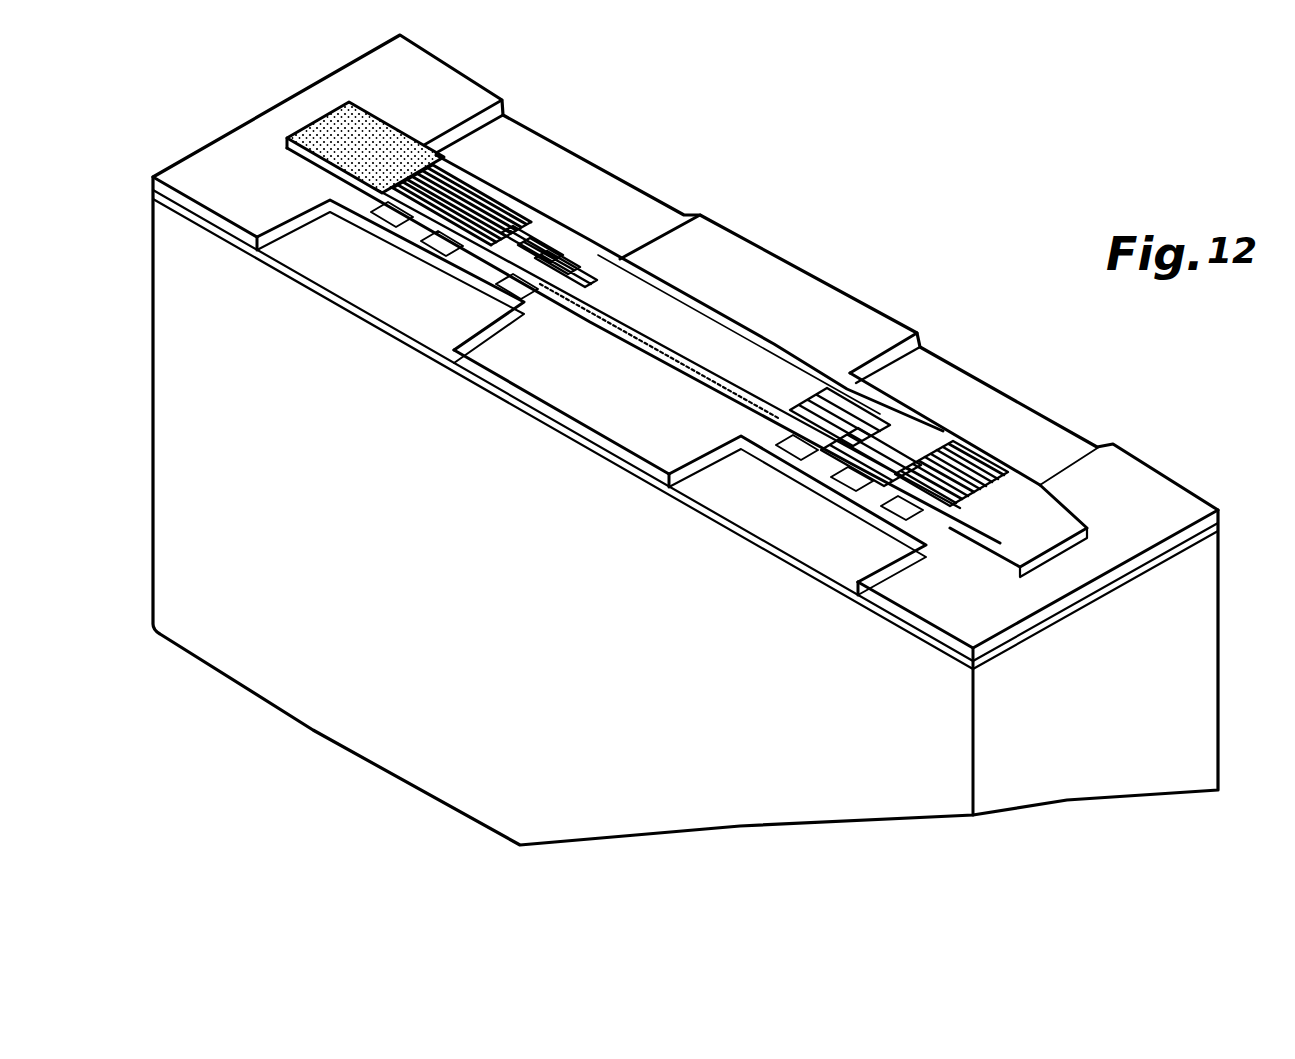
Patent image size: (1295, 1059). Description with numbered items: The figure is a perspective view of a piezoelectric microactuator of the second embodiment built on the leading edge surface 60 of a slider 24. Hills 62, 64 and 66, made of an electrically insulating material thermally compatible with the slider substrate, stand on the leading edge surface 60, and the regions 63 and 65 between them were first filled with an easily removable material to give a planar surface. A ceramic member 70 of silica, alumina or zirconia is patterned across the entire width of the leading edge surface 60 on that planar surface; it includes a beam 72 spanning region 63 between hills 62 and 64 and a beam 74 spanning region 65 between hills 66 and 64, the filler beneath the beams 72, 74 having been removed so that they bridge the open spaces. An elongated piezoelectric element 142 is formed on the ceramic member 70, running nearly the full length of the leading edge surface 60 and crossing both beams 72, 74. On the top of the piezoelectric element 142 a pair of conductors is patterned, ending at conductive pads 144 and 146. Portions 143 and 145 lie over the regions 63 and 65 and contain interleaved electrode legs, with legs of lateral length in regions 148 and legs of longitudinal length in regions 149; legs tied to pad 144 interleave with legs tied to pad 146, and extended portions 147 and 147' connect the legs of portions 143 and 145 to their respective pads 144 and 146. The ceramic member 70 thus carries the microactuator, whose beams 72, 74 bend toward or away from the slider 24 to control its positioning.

The slider 24 is at (1193, 747).
The leading edge surface 60 is at (552, 173).
The hill 62 is at (287, 255).
The region 63 is at (373, 313).
The hill 64 is at (703, 487).
The region 65 is at (743, 523).
The hill 66 is at (862, 592).
The ceramic member 70 is at (785, 292).
The beam 72 is at (432, 258).
The beam 74 is at (803, 520).
The piezoelectric element 142 is at (642, 300).
The portion 143 is at (497, 180).
The conductive pad 144 is at (393, 142).
The portion 145 is at (938, 430).
The conductive pad 146 is at (1028, 518).
The extended portion 147 is at (660, 355).
The extended portion 147' is at (775, 334).
The region 148 is at (385, 218).
The region 149 is at (430, 245).